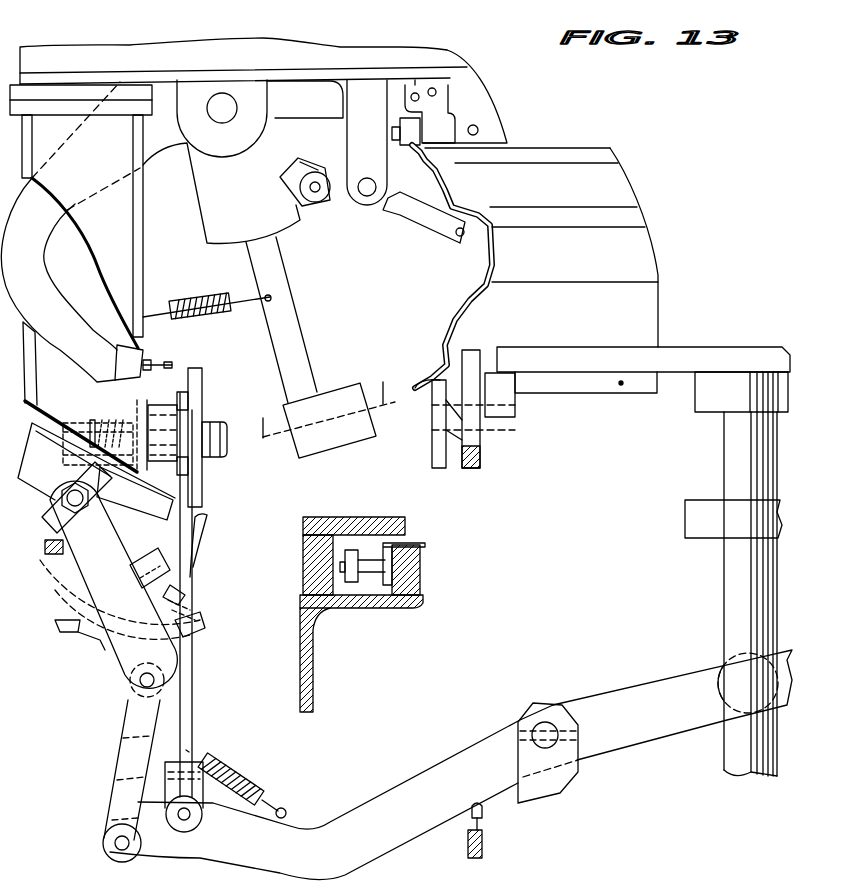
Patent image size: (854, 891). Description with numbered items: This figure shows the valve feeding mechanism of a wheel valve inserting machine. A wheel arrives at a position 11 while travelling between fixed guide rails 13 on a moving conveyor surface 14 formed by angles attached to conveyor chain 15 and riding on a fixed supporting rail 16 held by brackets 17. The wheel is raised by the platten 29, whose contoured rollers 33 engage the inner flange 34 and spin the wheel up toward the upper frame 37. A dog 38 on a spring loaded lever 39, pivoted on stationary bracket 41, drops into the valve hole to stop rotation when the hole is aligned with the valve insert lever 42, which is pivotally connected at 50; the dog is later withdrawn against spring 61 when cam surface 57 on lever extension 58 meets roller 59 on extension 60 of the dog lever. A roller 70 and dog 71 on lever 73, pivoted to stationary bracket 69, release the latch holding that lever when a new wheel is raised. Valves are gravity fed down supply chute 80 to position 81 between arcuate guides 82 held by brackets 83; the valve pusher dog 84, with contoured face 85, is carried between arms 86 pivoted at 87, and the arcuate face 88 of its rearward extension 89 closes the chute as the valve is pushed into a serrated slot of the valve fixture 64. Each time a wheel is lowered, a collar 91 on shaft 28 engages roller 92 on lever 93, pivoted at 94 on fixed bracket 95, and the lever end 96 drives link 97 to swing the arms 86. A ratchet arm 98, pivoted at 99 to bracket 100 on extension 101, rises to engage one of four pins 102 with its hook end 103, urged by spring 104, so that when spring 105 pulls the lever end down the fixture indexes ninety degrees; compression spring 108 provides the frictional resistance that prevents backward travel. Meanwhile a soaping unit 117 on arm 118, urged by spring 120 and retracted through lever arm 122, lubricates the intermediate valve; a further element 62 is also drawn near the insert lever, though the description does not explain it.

The wheel position under valve insert mechanism 11 is at (645, 250).
The fixed guide rails 13 is at (395, 518).
The moving conveyor surface 14 is at (438, 528).
The conveyor chain 15 is at (368, 578).
The fixed supporting rail 16 is at (415, 575).
The brackets 17 is at (310, 668).
The shaft 28 is at (735, 612).
The platten 29 is at (705, 352).
The contoured rollers 33 is at (468, 450).
The inner flange of wheel 34 is at (420, 395).
The upper frame 37 is at (136, 60).
The dog 38 is at (482, 210).
The spring loaded lever 39 is at (440, 228).
The stationary bracket 41 is at (376, 138).
The valve insert lever 42 is at (74, 310).
The pivotal connection of valve insert lever 50 is at (222, 100).
The cam surface 57 is at (290, 176).
The lever extension 58 is at (290, 222).
The roller 59 is at (324, 172).
The extension of lever 60 is at (306, 160).
The spring 61 is at (374, 205).
The pin 62 is at (165, 360).
The valve fixture 64 is at (202, 498).
The stationary bracket 69 is at (495, 115).
The roller 70 is at (411, 145).
The dog 71 is at (414, 83).
The lever 73 is at (448, 134).
The supply chute 80 is at (43, 483).
The valve position 81 is at (190, 592).
The arcuate guides 82 is at (204, 548).
The brackets 83 is at (148, 577).
The valve pusher dog 84 is at (205, 624).
The contoured face 85 is at (200, 600).
The arms 86 is at (85, 590).
The pivotal connection of arms 87 is at (50, 527).
The arcuate face 88 is at (56, 622).
The rearward extension 89 is at (82, 635).
The collar 91 is at (706, 505).
The roller 92 is at (722, 672).
The lever 93 is at (640, 688).
The pivot 94 is at (546, 728).
The fixed bracket 95 is at (556, 782).
The lever end 96 is at (250, 848).
The link 97 is at (122, 786).
The ratchet arm 98 is at (190, 722).
The pivotal connection of ratchet arm 99 is at (222, 765).
The bracket 100 is at (205, 805).
The extension 101 is at (178, 830).
The pins 102 is at (183, 392).
The hook end 103 is at (205, 440).
The spring 104 is at (265, 795).
The spring 105 is at (486, 842).
The compression spring 108 is at (108, 425).
The soaping unit 117 is at (340, 440).
The arm 118 is at (302, 352).
The spring 120 is at (206, 300).
The lever arm 122 is at (318, 112).